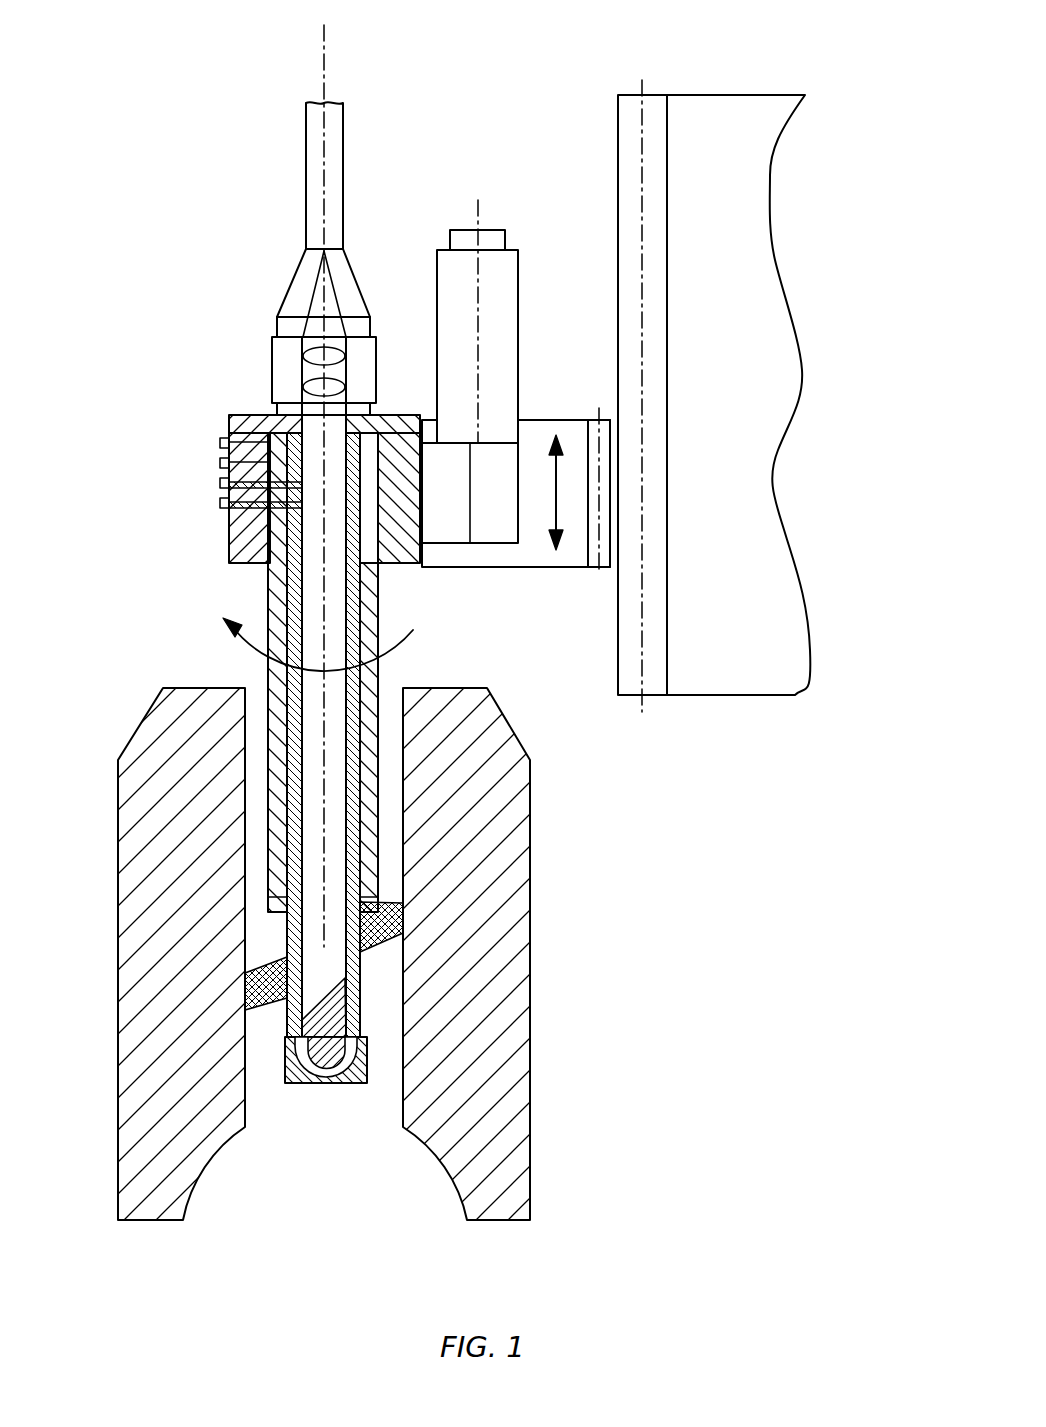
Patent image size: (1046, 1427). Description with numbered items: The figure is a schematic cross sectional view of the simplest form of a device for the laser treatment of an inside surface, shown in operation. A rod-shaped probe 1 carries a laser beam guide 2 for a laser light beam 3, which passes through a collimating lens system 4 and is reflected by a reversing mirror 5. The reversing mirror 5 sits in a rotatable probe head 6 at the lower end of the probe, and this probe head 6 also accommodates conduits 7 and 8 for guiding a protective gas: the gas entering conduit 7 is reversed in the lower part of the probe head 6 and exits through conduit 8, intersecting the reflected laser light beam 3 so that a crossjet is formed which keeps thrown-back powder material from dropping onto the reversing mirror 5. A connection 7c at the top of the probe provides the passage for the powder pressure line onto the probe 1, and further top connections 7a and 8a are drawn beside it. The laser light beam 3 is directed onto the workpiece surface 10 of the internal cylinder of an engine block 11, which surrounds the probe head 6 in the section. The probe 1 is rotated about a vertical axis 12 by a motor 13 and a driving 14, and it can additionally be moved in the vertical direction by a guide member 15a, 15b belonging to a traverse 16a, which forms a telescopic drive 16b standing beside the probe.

The rod-shaped probe 1 is at (277, 253).
The laser beam guide 2 is at (310, 628).
The laser light beam 3 is at (325, 437).
The collimating lens system 4 is at (317, 367).
The reversing mirror 5 is at (330, 1005).
The rotatable probe head 6 is at (375, 1065).
The conduit 7 is at (283, 925).
The connection terminal 7a is at (220, 503).
The connection 7c is at (220, 463).
The conduit 8 is at (365, 968).
The connection terminal 8a is at (220, 485).
The workpiece surface 10 is at (247, 993).
The engine block 11 is at (152, 763).
The vertical axis 12 is at (324, 74).
The motor 13 is at (490, 272).
The driving 14 is at (448, 510).
The guide member 15a is at (630, 547).
The guide member 15b is at (595, 427).
The traverse 16a is at (767, 175).
The telescopic drive 16b is at (618, 478).